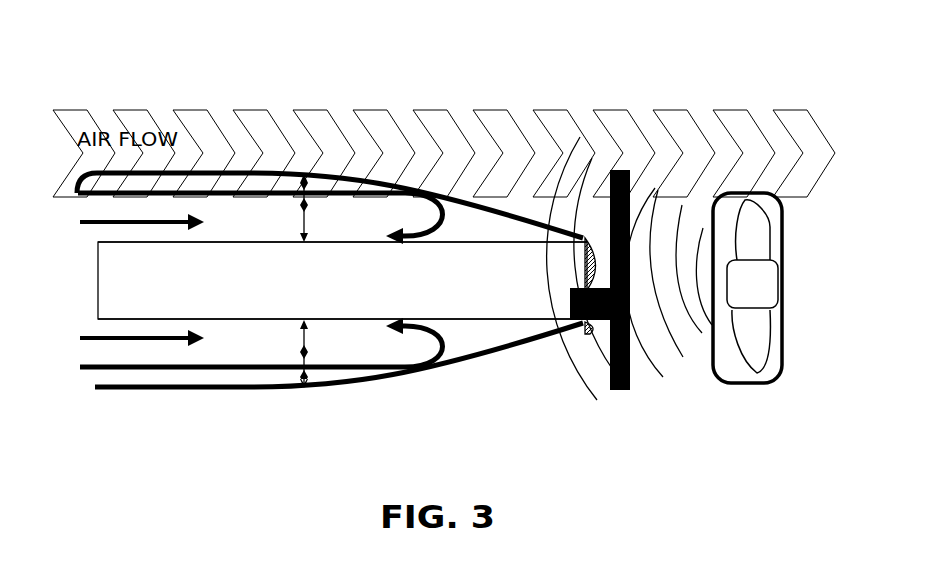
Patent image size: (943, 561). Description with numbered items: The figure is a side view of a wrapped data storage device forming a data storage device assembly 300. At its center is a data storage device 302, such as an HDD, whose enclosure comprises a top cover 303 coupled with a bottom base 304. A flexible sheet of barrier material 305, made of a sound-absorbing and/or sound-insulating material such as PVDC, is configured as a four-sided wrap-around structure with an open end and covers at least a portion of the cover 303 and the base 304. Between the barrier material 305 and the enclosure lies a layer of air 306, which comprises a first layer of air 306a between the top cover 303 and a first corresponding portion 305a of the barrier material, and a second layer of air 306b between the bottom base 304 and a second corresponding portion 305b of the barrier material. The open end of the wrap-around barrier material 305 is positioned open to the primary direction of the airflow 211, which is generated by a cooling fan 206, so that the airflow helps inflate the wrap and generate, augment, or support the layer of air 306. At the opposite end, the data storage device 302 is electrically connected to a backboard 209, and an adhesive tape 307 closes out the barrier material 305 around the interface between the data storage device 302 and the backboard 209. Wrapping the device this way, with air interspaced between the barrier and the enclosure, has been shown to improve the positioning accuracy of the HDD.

The data storage device assembly 300 is at (162, 56).
The airflow 211 is at (200, 222).
The layer of air 306 is at (308, 181).
The first corresponding portion of the wrap-around barrier material 305a is at (398, 182).
The second corresponding portion of the wrap-around barrier material 305b is at (313, 388).
The flexible sheet of barrier material 305 is at (301, 243).
The adhesive tape 307 is at (582, 138).
The cooling fan 206 is at (785, 280).
The top cover 303 is at (280, 242).
The data storage device 302 is at (145, 276).
The bottom base 304 is at (267, 320).
The first layer of air 306a is at (372, 235).
The second layer of air 306b is at (372, 350).
The backboard 209 is at (632, 360).